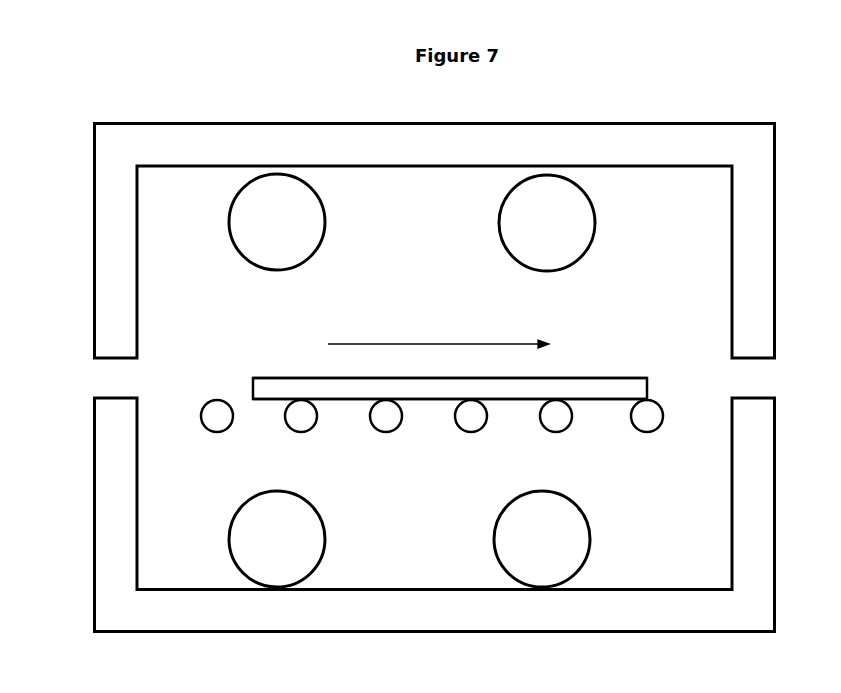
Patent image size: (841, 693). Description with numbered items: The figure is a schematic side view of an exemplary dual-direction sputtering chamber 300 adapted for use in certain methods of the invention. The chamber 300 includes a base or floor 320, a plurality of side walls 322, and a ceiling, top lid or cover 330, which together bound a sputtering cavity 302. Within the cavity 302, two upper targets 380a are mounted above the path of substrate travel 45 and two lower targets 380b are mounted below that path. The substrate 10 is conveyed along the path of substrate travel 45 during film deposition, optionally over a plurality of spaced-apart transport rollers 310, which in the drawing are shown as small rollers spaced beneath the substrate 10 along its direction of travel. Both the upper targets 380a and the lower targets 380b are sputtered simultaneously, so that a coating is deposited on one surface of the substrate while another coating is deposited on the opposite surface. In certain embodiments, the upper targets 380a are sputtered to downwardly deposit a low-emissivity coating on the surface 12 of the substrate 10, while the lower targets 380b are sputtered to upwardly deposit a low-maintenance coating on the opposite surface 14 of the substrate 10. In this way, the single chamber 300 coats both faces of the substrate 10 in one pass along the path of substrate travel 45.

The dual-direction sputtering chamber 300 is at (710, 80).
The ceiling 330 is at (224, 140).
The base 320 is at (437, 612).
The sputtering cavity 302 is at (182, 223).
The side walls 322 is at (115, 478).
The upper targets 380a is at (290, 205).
The lower targets 380b is at (300, 533).
The substrate 10 is at (598, 386).
The surface 12 is at (284, 377).
The surface 14 is at (268, 401).
The path of substrate travel 45 is at (438, 332).
The transport rollers 310 is at (218, 417).